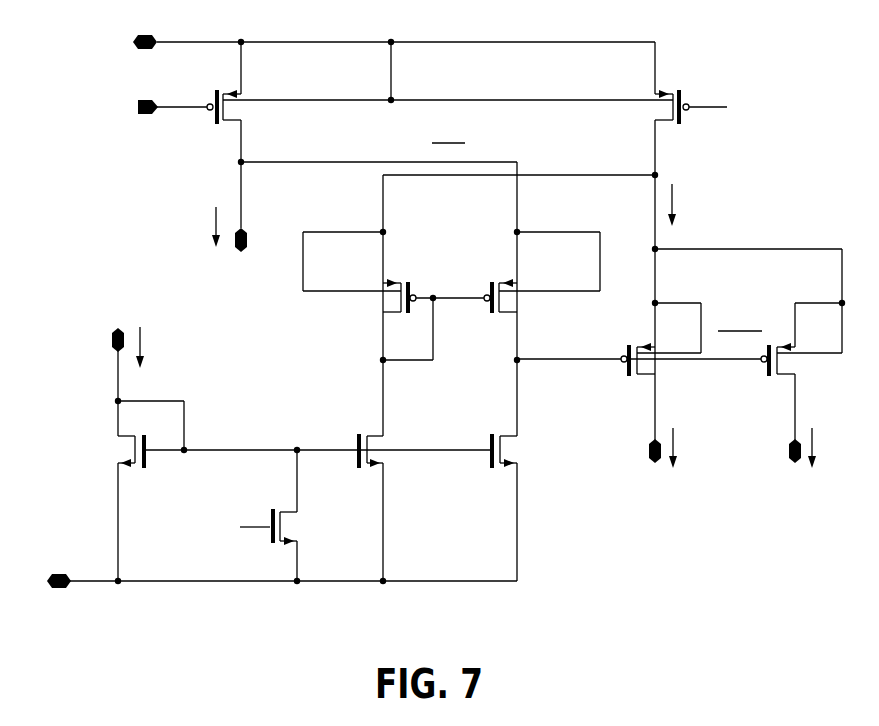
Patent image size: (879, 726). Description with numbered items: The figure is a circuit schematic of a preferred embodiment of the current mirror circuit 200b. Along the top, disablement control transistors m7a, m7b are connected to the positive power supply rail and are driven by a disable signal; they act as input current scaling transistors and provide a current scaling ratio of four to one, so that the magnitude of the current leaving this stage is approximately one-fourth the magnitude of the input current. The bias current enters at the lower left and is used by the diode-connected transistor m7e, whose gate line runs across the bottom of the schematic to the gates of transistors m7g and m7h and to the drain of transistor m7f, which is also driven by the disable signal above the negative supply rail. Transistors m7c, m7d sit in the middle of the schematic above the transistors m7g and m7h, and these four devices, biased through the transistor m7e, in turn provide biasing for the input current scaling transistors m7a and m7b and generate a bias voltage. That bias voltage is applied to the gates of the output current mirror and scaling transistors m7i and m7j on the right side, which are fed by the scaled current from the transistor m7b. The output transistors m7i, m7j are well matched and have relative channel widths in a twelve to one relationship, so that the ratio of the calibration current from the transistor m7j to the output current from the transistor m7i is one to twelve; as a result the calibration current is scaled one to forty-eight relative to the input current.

The current mirror circuit 200b is at (112, 629).
The disablement control transistor m7a is at (250, 112).
The disablement control transistor m7b is at (647, 112).
The bias transistor m7c is at (375, 288).
The bias transistor m7d is at (525, 288).
The diode-connected transistor m7e is at (104, 444).
The transistor m7f is at (309, 527).
The bias transistor m7g is at (398, 444).
The bias transistor m7h is at (530, 444).
The output current mirror and scaling transistor m7i is at (662, 370).
The output current mirror and scaling transistor m7j is at (802, 370).